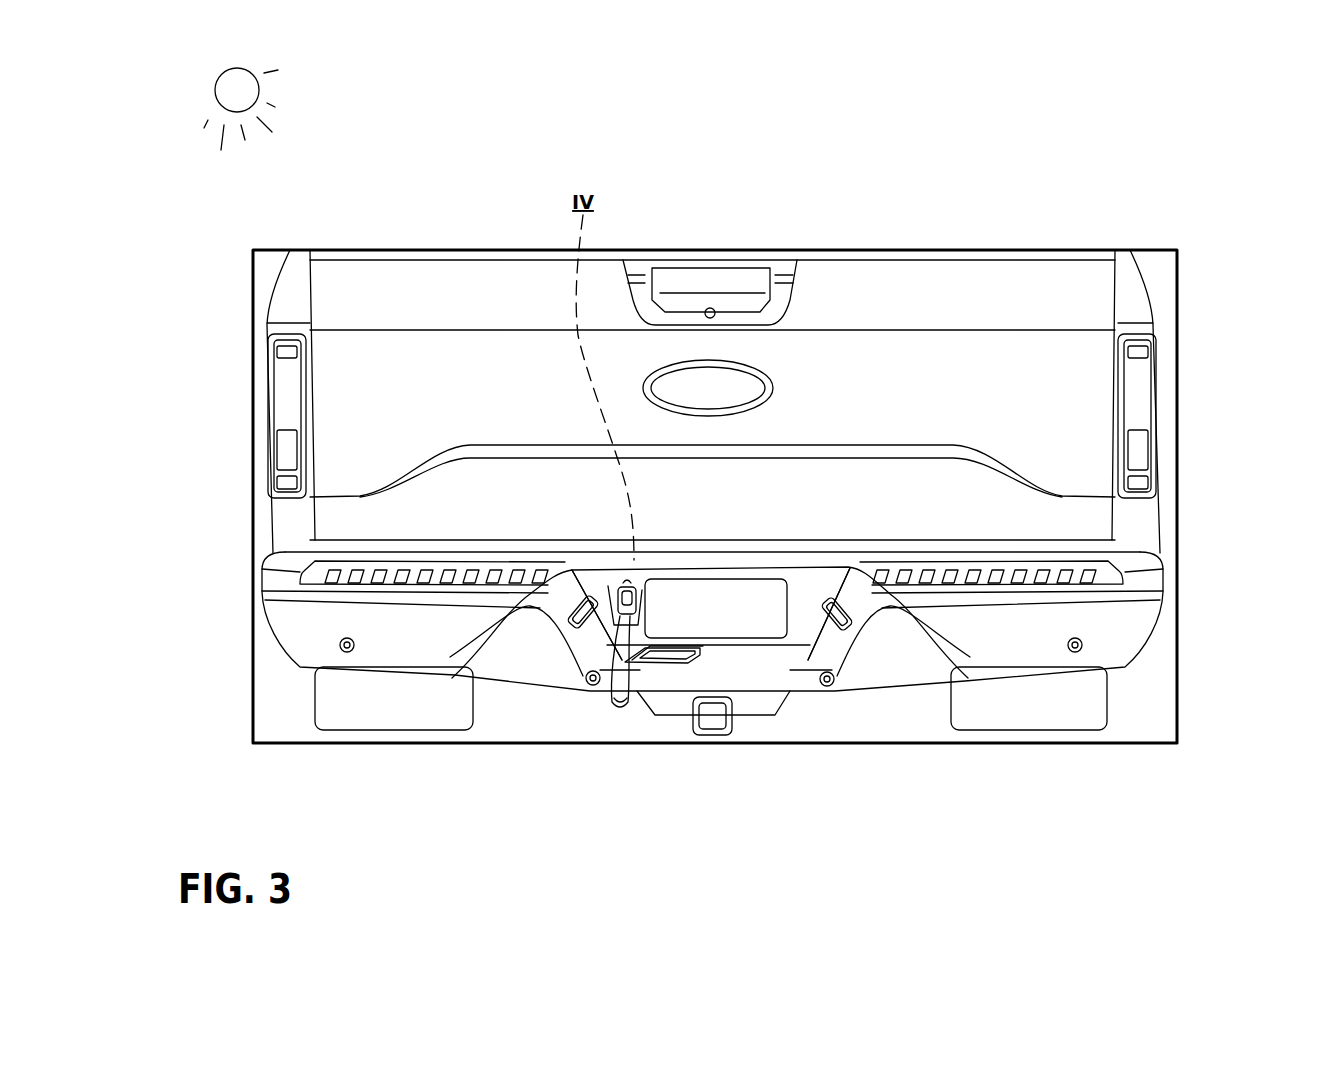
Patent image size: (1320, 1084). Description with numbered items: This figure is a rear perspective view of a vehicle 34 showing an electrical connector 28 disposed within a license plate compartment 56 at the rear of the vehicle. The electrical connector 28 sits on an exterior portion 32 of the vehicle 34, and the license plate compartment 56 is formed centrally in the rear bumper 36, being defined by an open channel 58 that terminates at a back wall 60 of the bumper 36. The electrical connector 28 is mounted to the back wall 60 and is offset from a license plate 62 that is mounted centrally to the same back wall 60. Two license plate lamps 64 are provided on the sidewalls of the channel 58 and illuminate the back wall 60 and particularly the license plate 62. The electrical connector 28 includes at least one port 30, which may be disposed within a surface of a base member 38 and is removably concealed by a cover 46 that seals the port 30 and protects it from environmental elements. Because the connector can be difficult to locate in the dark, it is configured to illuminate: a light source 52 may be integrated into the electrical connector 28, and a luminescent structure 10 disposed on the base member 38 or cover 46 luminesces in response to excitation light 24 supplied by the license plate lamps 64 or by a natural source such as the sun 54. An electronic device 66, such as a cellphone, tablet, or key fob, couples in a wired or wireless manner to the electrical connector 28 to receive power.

The luminescent structure 10 is at (647, 600).
The excitation light 24 is at (270, 88).
The electrical connector 28 is at (610, 705).
The port 30 is at (633, 586).
The exterior portion 32 is at (350, 526).
The vehicle 34 is at (1035, 236).
The rear bumper 36 is at (297, 640).
The base member 38 is at (602, 690).
The cover 46 is at (627, 708).
The light source 52 is at (576, 620).
The sun 54 is at (232, 100).
The license plate compartment 56 is at (707, 662).
The open channel 58 is at (745, 657).
The back wall 60 is at (805, 580).
The license plate 62 is at (828, 640).
The license plate lamps 64 is at (566, 645).
The electronic device 66 is at (693, 642).